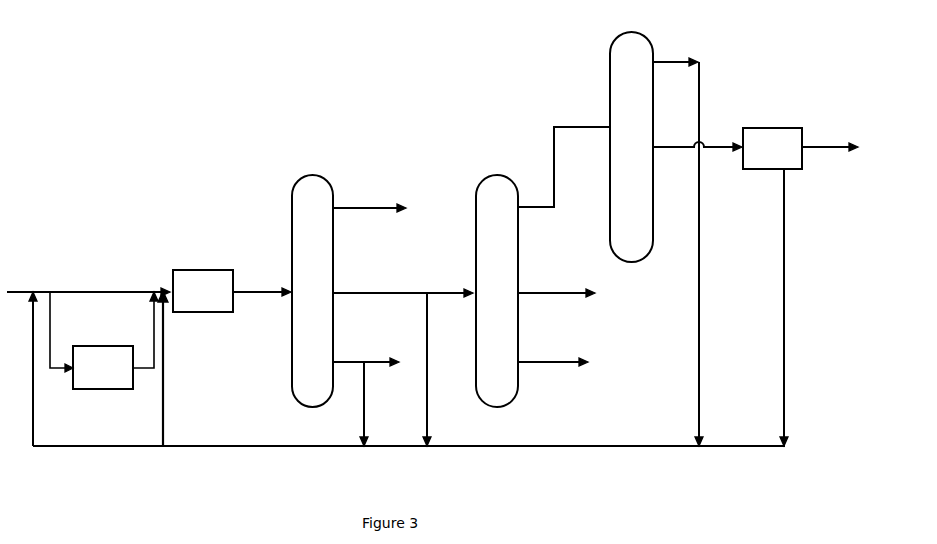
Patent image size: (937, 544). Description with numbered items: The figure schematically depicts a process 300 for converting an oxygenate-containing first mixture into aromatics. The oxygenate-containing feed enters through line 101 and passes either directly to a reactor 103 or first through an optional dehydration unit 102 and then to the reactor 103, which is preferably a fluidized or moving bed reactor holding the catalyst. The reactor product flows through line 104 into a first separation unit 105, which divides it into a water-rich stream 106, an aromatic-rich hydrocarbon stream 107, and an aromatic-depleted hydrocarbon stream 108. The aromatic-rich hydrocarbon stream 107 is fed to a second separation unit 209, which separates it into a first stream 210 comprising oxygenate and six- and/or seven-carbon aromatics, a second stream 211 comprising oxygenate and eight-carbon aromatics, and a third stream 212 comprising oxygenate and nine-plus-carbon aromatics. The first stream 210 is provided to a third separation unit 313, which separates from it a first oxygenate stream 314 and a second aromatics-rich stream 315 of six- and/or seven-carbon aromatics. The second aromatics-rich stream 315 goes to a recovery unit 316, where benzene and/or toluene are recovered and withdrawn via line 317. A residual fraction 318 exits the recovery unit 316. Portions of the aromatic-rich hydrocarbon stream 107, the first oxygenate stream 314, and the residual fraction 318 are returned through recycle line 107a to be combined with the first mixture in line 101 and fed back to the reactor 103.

The process 300 is at (133, 105).
The line 101 is at (72, 290).
The dehydration unit 102 is at (117, 376).
The reactor 103 is at (217, 299).
The line 104 is at (265, 290).
The first separation unit 105 is at (326, 271).
The water-rich stream 106 is at (380, 206).
The aromatic-rich hydrocarbon stream 107 is at (378, 291).
The aromatic-depleted hydrocarbon stream 108 is at (388, 359).
The second separation unit 209 is at (511, 272).
The first stream 210 is at (571, 125).
The second stream 211 is at (537, 291).
The third stream 212 is at (550, 359).
The third separation unit 313 is at (645, 130).
The first oxygenate stream 314 is at (672, 60).
The second aromatics-rich stream 315 is at (683, 150).
The recovery unit 316 is at (786, 156).
The line 317 is at (826, 145).
The residual fraction 318 is at (783, 202).
The recycle line 107a is at (590, 444).